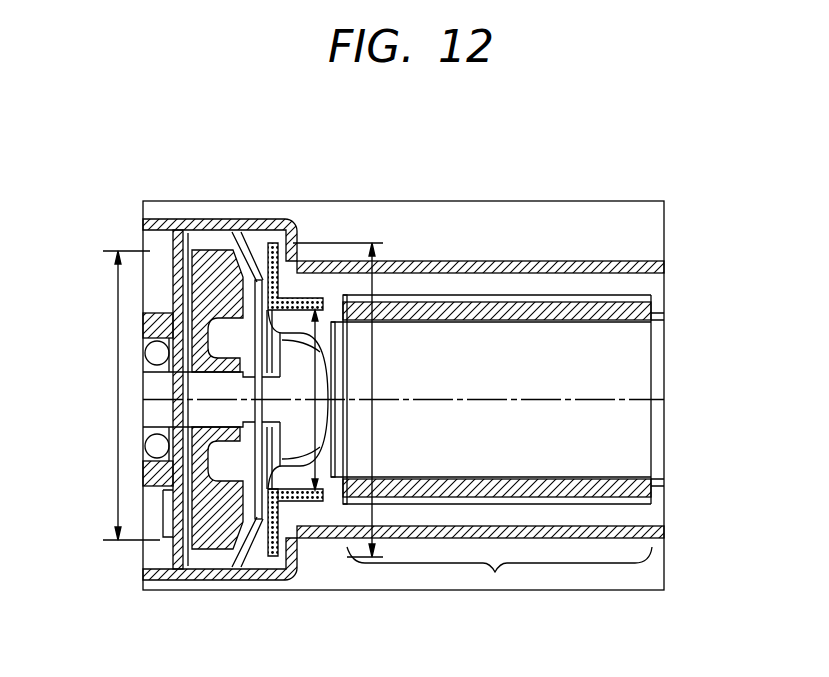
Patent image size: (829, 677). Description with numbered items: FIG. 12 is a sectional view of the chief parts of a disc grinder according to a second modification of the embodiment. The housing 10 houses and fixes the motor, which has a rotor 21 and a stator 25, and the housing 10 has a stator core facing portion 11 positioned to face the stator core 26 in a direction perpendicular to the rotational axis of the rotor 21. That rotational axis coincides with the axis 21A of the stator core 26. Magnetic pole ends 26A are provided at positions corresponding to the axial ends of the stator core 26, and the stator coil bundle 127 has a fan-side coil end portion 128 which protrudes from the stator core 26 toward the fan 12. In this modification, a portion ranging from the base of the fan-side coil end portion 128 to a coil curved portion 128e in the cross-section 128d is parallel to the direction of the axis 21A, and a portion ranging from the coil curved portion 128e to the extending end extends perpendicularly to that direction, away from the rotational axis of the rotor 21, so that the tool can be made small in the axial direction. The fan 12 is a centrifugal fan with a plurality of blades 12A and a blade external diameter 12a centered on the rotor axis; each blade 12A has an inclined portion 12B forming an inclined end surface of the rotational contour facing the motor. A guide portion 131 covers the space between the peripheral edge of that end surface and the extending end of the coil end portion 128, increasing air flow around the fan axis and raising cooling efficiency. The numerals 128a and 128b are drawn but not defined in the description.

The housing 10 is at (651, 547).
The stator core facing portion 11 is at (495, 573).
The fan 12 is at (182, 586).
The blade 12A is at (213, 263).
The inclined portion 12B is at (263, 232).
The blade external diameter 12a is at (118, 355).
The rotor 21 is at (608, 365).
The axis of the stator core 21A is at (605, 405).
The stator 25 is at (620, 503).
The stator core 26 is at (568, 293).
The magnetic pole end 26A is at (652, 287).
The stator coil bundle 127 is at (313, 298).
The fan-side coil end portion 128 is at (293, 478).
The impeller shroud 128a is at (377, 348).
The impeller passage 128b is at (400, 425).
The cross-section of the fan-side coil end portion 128d is at (283, 556).
The coil curved portion 128e is at (283, 255).
The guide portion 131 is at (219, 579).